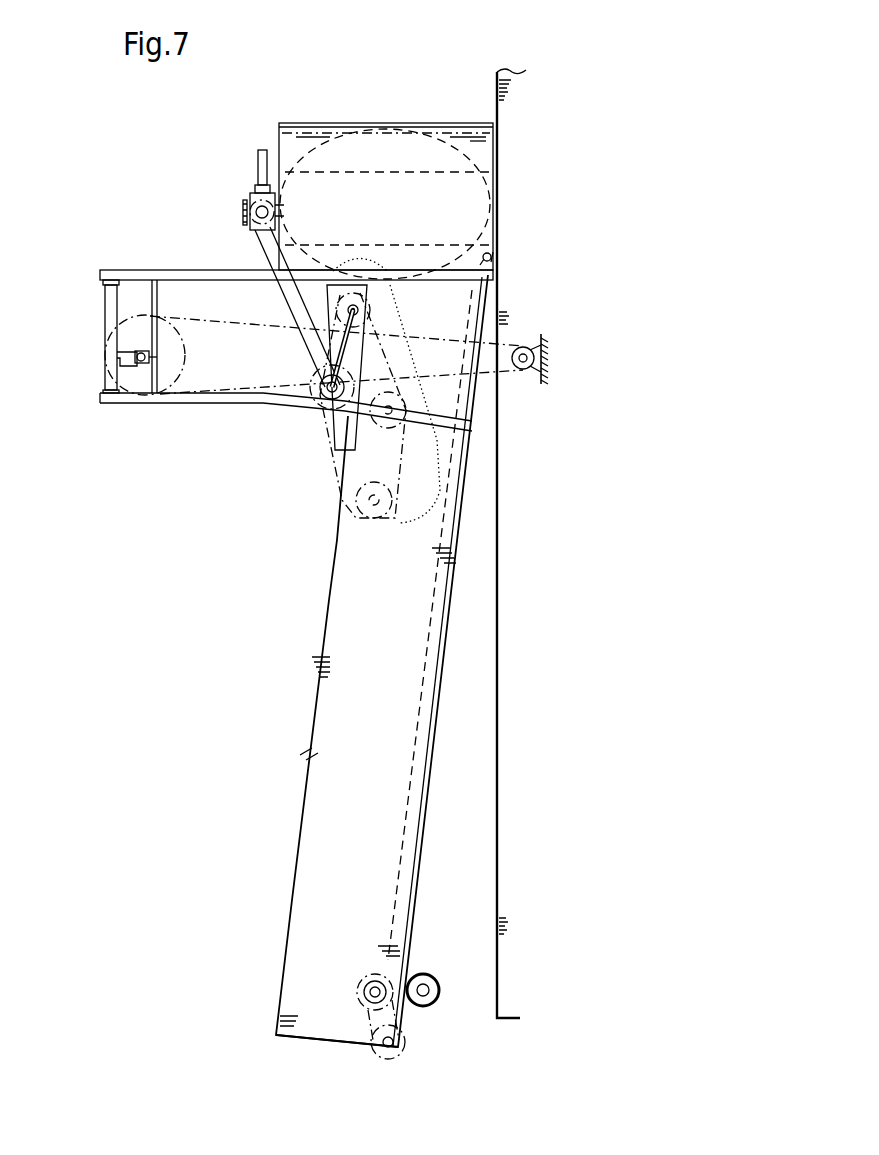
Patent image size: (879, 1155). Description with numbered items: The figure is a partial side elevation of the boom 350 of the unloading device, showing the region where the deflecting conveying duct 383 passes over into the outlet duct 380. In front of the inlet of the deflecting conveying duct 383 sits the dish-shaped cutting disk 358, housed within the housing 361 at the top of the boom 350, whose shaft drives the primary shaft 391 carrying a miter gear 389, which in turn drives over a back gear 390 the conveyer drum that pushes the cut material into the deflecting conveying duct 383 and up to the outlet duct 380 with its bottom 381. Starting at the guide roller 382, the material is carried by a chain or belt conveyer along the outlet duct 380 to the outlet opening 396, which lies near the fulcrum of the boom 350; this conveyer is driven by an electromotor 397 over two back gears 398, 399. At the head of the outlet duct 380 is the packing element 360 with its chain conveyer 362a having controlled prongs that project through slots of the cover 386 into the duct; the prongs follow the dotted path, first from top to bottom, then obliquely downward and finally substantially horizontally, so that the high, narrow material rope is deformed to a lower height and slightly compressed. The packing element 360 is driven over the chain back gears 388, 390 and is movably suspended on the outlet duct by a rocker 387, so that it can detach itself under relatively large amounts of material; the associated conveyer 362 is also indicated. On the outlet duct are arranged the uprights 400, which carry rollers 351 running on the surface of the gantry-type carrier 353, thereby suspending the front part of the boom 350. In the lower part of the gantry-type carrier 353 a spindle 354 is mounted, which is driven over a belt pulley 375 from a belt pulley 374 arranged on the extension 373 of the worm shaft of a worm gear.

The boom 350 is at (300, 753).
The rollers 351 is at (105, 298).
The gantry-type carrier 353 is at (118, 362).
The spindle 354 is at (147, 368).
The cutting disk 358 is at (340, 148).
The packing element 360 is at (379, 525).
The housing 361 is at (414, 112).
The drive belt 362 is at (411, 788).
The chain conveyer 362a is at (340, 470).
The extension of the worm shaft 373 is at (524, 370).
The belt pulley 374 is at (526, 346).
The belt pulley 375 is at (186, 355).
The outlet duct 380 is at (326, 642).
The bottom 381 is at (448, 752).
The guide roller 382 is at (492, 256).
The deflecting conveying duct 383 is at (488, 137).
The cover 386 is at (405, 440).
The rocker 387 is at (325, 350).
The chain back gear 388 is at (290, 307).
The miter gear 389 is at (250, 200).
The back gear 390 is at (320, 396).
The primary shaft 391 is at (258, 162).
The outlet opening 396 is at (282, 1032).
The electromotor 397 is at (438, 985).
The back gear 398 is at (366, 975).
The back gear 399 is at (372, 1046).
The uprights 400 is at (143, 270).